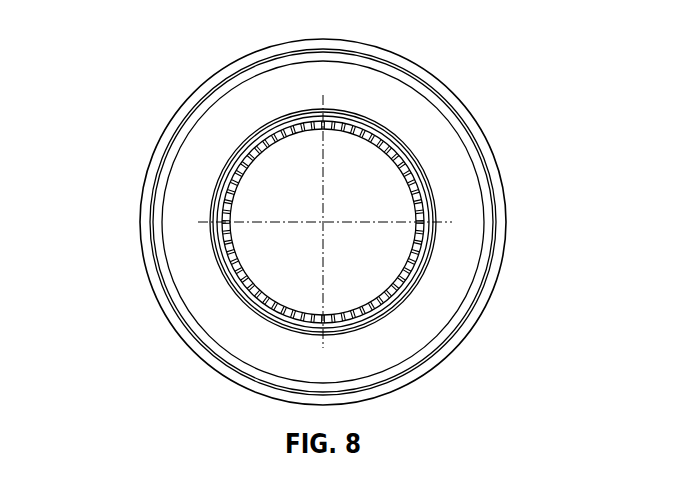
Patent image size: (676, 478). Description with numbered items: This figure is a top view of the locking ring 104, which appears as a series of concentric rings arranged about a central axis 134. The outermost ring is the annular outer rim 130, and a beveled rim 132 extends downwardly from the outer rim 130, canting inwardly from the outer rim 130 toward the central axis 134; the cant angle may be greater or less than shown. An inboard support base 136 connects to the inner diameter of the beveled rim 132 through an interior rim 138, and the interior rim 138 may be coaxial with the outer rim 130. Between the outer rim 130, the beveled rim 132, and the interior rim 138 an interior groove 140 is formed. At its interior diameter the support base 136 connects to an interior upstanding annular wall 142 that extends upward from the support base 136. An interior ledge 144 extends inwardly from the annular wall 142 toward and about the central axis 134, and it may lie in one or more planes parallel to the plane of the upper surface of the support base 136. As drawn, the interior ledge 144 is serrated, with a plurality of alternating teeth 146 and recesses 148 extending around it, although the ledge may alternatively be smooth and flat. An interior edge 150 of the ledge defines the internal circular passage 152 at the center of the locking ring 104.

The locking ring 104 is at (148, 79).
The annular outer rim 130 is at (507, 203).
The beveled rim 132 is at (485, 187).
The central axis 134 is at (325, 222).
The inboard support base 136 is at (432, 138).
The interior rim 138 is at (467, 140).
The interior groove 140 is at (420, 83).
The interior upstanding annular wall 142 is at (368, 120).
The interior ledge 144 is at (367, 140).
The teeth 146 is at (302, 132).
The recesses 148 is at (260, 147).
The interior edge 150 is at (233, 207).
The internal circular passage 152 is at (360, 260).